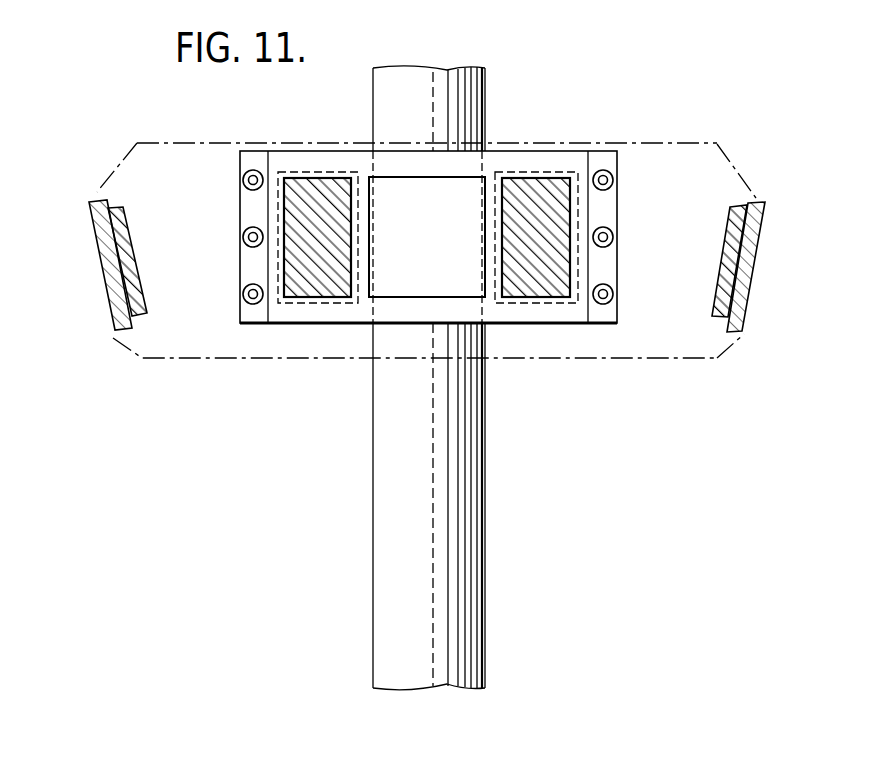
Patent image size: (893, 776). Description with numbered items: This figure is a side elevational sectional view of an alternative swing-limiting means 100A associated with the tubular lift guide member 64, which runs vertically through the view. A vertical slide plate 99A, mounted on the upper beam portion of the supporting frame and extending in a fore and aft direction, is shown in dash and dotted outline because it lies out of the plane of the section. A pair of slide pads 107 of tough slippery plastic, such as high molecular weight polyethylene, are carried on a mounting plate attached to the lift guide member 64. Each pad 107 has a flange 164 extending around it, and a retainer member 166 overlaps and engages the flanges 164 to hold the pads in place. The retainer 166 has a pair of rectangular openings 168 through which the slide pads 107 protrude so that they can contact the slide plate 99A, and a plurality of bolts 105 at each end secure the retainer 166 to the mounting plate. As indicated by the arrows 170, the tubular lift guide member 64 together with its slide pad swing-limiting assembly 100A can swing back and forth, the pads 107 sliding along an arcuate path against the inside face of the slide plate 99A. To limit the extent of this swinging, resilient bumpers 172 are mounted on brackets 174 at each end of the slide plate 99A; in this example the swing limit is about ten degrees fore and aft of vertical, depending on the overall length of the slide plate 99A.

The tubular lift guide member 64 is at (480, 533).
The slide plate 99A is at (250, 366).
The swing-limiting means 100A is at (655, 110).
The bolts 105 is at (247, 281).
The slide pads 107 is at (312, 290).
The flange 164 is at (340, 303).
The retainer member 166 is at (507, 152).
The rectangular openings 168 is at (310, 180).
The arrows 170 is at (210, 230).
The resilient bumpers 172 is at (118, 209).
The brackets 174 is at (96, 200).